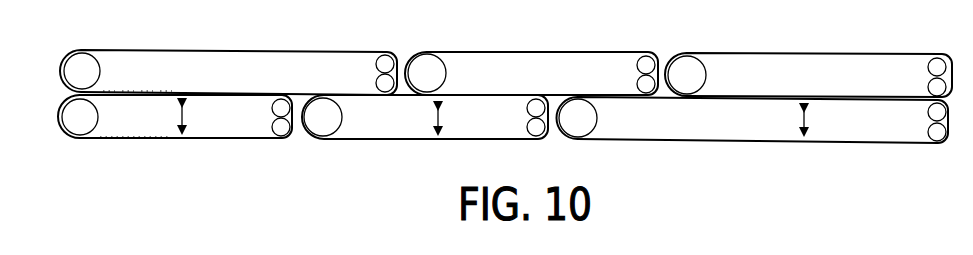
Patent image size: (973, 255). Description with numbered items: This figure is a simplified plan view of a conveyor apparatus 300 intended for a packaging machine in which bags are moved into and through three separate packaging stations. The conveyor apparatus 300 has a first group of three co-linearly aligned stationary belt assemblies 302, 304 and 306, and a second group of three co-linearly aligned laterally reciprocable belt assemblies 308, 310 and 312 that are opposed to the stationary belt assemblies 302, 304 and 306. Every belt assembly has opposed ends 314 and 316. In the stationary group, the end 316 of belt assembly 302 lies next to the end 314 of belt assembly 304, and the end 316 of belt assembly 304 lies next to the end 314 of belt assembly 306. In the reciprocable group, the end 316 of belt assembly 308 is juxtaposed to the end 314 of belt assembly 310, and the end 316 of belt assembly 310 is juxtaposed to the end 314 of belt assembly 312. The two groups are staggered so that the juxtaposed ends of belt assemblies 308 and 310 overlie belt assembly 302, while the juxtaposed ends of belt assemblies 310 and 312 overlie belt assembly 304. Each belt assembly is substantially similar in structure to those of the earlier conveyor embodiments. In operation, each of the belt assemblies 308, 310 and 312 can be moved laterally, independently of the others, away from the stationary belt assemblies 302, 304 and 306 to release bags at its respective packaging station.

The conveyor apparatus 300 is at (242, 172).
The stationary belt assembly 302 is at (213, 50).
The stationary belt assembly 304 is at (567, 52).
The stationary belt assembly 306 is at (828, 53).
The laterally reciprocable belt assembly 308 is at (181, 142).
The laterally reciprocable belt assembly 310 is at (428, 141).
The laterally reciprocable belt assembly 312 is at (830, 143).
The end 314 is at (64, 60).
The end 316 is at (395, 52).